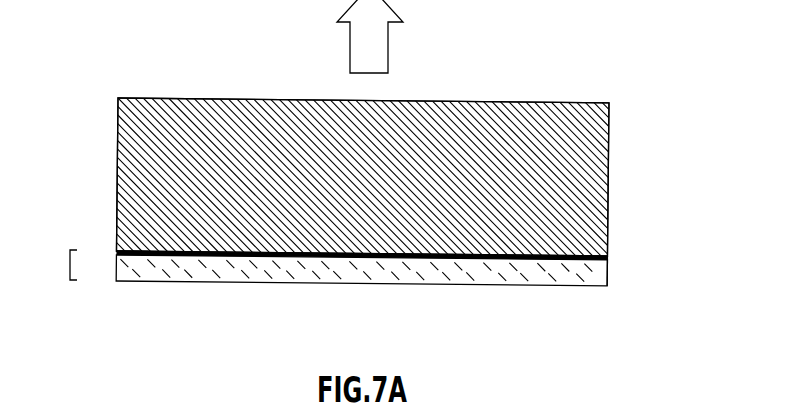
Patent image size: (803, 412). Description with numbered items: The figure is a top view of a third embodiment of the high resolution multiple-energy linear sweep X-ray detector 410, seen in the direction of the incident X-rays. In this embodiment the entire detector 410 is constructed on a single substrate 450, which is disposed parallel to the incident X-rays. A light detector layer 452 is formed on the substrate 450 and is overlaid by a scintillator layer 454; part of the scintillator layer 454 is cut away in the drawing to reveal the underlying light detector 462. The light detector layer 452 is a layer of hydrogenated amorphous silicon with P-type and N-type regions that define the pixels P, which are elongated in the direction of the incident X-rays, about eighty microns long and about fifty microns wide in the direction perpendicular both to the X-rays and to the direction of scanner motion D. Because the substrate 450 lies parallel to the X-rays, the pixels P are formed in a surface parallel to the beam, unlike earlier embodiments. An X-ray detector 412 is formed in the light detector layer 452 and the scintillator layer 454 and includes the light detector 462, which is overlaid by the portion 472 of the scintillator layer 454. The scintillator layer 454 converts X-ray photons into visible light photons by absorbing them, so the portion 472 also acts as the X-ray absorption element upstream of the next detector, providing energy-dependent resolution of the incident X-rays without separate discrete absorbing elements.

The multiple-energy linear sweep X-ray detector 410 is at (236, 67).
The substrate 450 is at (609, 181).
The light detector 462 is at (609, 258).
The scintillator layer 454 is at (156, 282).
The light detector layer 452 is at (96, 252).
The X-ray detector 412 is at (70, 265).
The portion of the scintillator layer 472 is at (625, 268).
The pixels P is at (350, 258).
The direction of scanner motion D is at (391, 10).